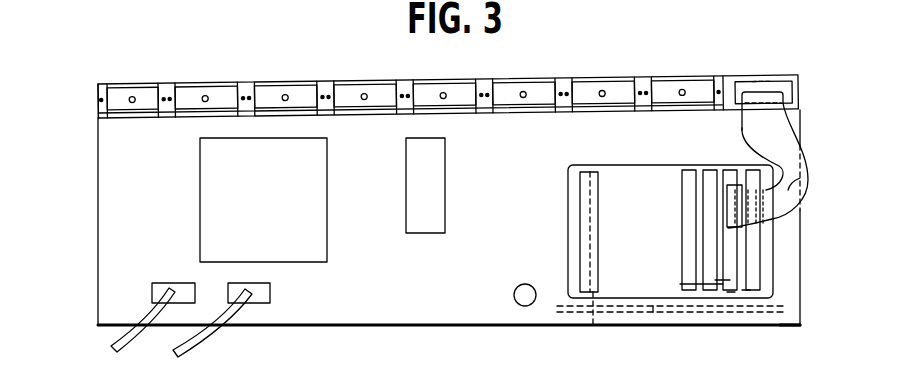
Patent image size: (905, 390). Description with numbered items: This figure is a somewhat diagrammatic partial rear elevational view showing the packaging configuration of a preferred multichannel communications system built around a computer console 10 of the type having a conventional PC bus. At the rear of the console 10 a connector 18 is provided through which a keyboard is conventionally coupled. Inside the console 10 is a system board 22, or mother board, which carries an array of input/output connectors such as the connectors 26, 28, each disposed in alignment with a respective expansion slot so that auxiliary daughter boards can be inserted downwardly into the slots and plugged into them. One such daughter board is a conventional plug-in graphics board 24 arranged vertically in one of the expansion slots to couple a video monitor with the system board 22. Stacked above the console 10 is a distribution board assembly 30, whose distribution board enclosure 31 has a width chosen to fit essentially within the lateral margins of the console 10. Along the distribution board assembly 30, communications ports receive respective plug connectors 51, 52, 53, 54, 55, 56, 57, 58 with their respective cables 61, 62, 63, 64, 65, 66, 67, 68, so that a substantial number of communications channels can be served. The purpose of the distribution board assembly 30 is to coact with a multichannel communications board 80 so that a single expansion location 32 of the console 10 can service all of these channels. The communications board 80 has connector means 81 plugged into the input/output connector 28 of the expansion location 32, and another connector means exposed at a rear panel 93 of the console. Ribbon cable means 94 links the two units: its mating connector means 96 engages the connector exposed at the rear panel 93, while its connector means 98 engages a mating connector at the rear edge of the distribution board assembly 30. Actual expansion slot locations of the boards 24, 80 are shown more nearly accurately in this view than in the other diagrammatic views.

The computer console 10 is at (97, 223).
The connector 18 is at (522, 306).
The system board 22 is at (653, 312).
The graphics board 24 is at (580, 253).
The input/output connector 26 is at (592, 325).
The input/output connector 28 is at (745, 292).
The distribution board assembly 30 is at (97, 115).
The distribution board enclosure 31 is at (97, 86).
The expansion location 32 is at (723, 281).
The plug connector 51 is at (151, 98).
The plug connector 52 is at (230, 98).
The plug connector 53 is at (309, 98).
The plug connector 54 is at (388, 98).
The plug connector 55 is at (465, 98).
The plug connector 56 is at (545, 98).
The plug connector 57 is at (624, 98).
The plug connector 58 is at (703, 98).
The cable 61 is at (129, 97).
The cable 62 is at (202, 97).
The cable 63 is at (282, 97).
The cable 64 is at (361, 97).
The cable 65 is at (440, 97).
The cable 66 is at (520, 97).
The cable 67 is at (599, 97).
The cable 68 is at (679, 97).
The multichannel communications board 80 is at (801, 337).
The connector means 81 is at (730, 293).
The rear panel 93 is at (550, 307).
The ribbon cable means 94 is at (806, 180).
The mating connector means 96 is at (727, 222).
The connector means 98 is at (772, 91).